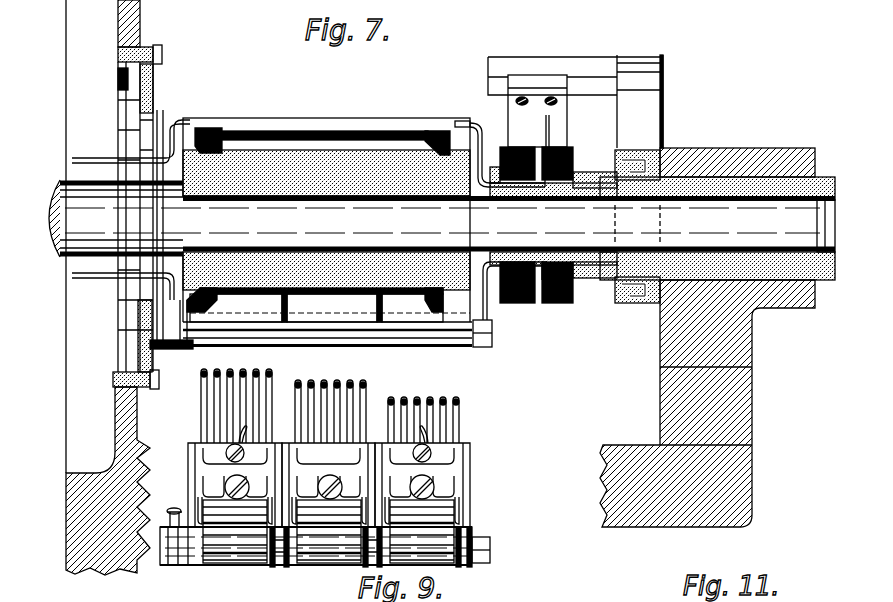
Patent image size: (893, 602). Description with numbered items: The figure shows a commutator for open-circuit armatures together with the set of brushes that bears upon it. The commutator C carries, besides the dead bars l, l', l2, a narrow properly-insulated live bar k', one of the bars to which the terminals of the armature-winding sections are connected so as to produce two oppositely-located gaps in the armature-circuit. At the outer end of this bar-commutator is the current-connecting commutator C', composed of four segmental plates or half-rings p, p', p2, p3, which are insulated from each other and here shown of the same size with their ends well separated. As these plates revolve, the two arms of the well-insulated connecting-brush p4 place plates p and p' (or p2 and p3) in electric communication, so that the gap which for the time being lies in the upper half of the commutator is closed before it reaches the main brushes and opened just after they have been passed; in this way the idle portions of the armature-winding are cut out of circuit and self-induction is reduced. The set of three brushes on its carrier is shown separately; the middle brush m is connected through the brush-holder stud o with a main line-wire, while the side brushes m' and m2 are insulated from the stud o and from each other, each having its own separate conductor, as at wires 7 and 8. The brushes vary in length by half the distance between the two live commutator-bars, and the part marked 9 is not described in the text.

In FIG. 7, the armature C is at (337, 218).
In FIG. 7, the narrow live bar k' is at (326, 157).
In FIG. 7, the dead bar l is at (236, 308).
In FIG. 7, the dead bar l' is at (332, 308).
In FIG. 7, the dead bar l2 is at (412, 308).
In FIG. 7, the current-connecting commutator C' is at (575, 89).
In FIG. 7, the segmental plate p is at (510, 151).
In FIG. 7, the segmental plate p' is at (570, 152).
In FIG. 7, the segmental plate p2 is at (524, 303).
In FIG. 7, the segmental plate p3 is at (558, 303).
In FIG. 7, the connecting-brush p4 is at (553, 142).
In FIG. 9, the middle brush m is at (330, 402).
In FIG. 9, the side brush m' is at (423, 412).
In FIG. 9, the side brush m2 is at (236, 396).
In FIG. 9, the wire 7 is at (430, 438).
In FIG. 9, the wire 8 is at (235, 438).
In FIG. 9, the shaft rod 9 is at (173, 532).
In FIG. 9, the brush-holder stud o is at (170, 525).